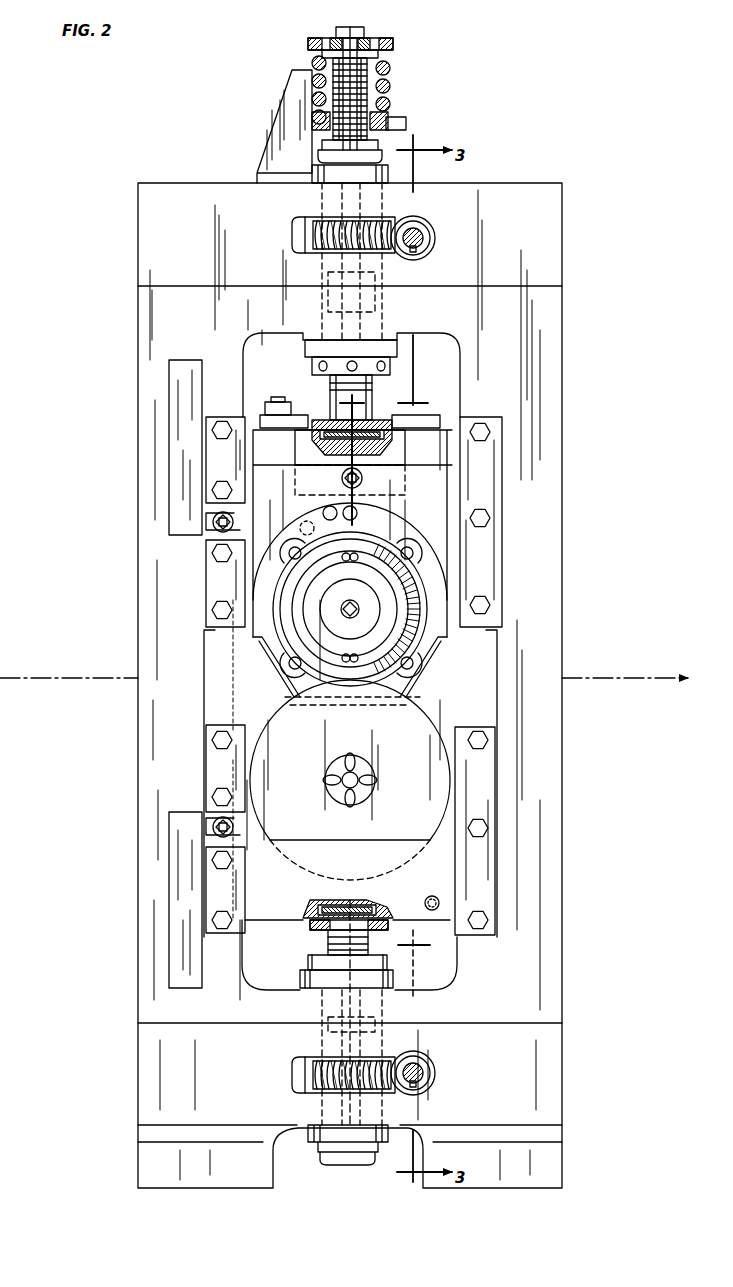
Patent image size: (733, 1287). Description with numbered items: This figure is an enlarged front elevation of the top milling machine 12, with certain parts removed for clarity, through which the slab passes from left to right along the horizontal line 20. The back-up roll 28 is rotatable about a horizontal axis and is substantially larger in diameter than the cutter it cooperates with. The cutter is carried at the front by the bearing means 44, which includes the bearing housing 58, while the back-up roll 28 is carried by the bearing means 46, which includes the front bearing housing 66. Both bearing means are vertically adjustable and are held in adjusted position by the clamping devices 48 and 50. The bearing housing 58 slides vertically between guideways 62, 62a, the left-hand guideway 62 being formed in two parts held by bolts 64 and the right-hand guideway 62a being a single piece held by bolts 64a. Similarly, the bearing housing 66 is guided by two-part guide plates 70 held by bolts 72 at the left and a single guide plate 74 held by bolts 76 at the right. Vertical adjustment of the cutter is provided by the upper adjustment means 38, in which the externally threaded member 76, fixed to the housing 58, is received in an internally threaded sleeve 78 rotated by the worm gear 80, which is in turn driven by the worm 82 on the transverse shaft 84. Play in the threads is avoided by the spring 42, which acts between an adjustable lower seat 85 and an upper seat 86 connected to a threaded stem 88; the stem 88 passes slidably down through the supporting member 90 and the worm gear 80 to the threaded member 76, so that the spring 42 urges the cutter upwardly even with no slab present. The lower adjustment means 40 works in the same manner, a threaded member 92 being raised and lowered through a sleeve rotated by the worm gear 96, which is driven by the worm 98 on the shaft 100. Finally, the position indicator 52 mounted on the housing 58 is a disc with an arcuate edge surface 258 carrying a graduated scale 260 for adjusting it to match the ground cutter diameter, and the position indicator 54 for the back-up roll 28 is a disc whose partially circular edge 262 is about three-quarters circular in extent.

The top milling machine 12 is at (446, 84).
The horizontal line 20 is at (85, 658).
The back-up roll 28 is at (393, 886).
The upper adjustment means 38 is at (318, 399).
The lower adjustment means 40 is at (298, 970).
The spring 42 is at (393, 68).
The bearing means 44 is at (258, 650).
The bearing means 46 is at (448, 705).
The clamping device 48 is at (152, 418).
The clamping device 50 is at (160, 844).
The position indicator 52 is at (322, 665).
The position indicator 54 is at (307, 836).
The bearing housing 58 is at (438, 456).
The guideway 62 is at (232, 420).
The guideway 62a is at (462, 420).
The bolts 64 is at (214, 420).
The bolts 64a is at (482, 514).
The bearing housing 66 is at (272, 890).
The guide plates 70 is at (236, 698).
The bolts 72 is at (214, 797).
The guide plate 74 is at (490, 765).
The externally threaded member 76 is at (372, 396).
The internally threaded sleeve 78 is at (386, 317).
The worm gear 80 is at (295, 236).
The worm 82 is at (427, 232).
The shaft 84 is at (424, 241).
The adjustable lower seat 85 is at (408, 124).
The upper seat 86 is at (394, 45).
The threaded stem 88 is at (362, 30).
The supporting member 90 is at (395, 101).
The threaded member 92 is at (340, 946).
The worm gear 96 is at (393, 1092).
The worm 98 is at (417, 1056).
The shaft 100 is at (424, 1076).
The arcuate edge surface 258 is at (430, 670).
The graduated scale 260 is at (405, 600).
The partially circular edge 262 is at (415, 698).